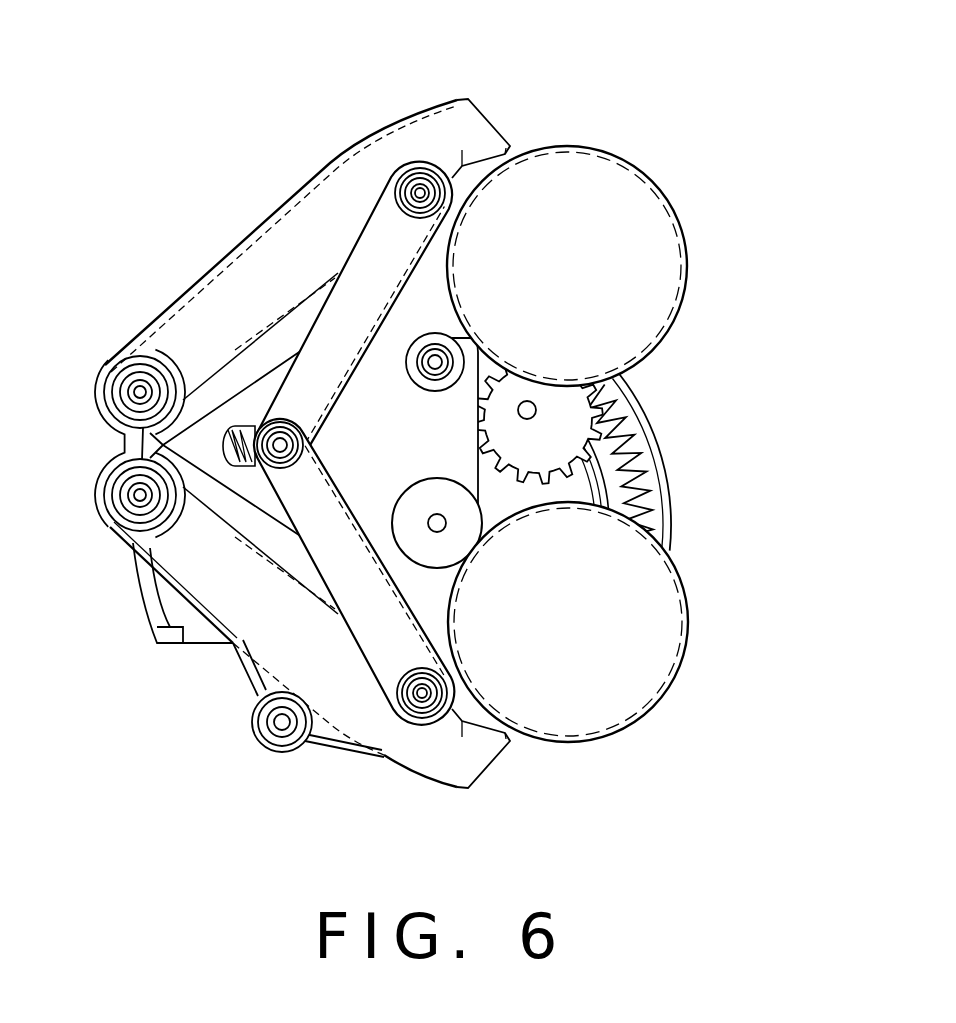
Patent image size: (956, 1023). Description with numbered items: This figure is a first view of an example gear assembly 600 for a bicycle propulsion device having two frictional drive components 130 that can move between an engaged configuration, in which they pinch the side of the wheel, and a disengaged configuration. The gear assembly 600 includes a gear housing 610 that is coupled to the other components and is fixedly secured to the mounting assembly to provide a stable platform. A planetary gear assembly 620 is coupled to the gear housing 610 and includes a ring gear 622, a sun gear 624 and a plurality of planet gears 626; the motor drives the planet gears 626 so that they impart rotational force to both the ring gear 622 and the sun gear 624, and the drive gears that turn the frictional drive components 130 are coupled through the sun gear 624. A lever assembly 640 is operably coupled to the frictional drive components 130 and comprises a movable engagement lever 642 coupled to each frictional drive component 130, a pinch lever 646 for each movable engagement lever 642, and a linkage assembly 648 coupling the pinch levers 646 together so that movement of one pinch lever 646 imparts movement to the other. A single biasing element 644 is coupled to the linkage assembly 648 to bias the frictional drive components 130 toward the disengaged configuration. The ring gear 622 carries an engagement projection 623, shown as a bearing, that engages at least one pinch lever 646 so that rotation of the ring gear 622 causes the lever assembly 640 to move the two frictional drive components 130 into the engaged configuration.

The gear assembly 600 is at (439, 427).
The lever assembly 640 is at (207, 186).
The pinch lever 646 is at (360, 177).
The linkage assembly 648 is at (350, 366).
The biasing element 644 is at (222, 447).
The gear housing 610 is at (155, 600).
The engagement projection 623 is at (270, 740).
The frictional drive component 130 is at (585, 266).
The movable engagement lever 642 is at (483, 370).
The planet gear 626 is at (615, 380).
The ring gear 622 is at (560, 415).
The sun gear 624 is at (590, 490).
The planetary gear assembly 620 is at (656, 458).